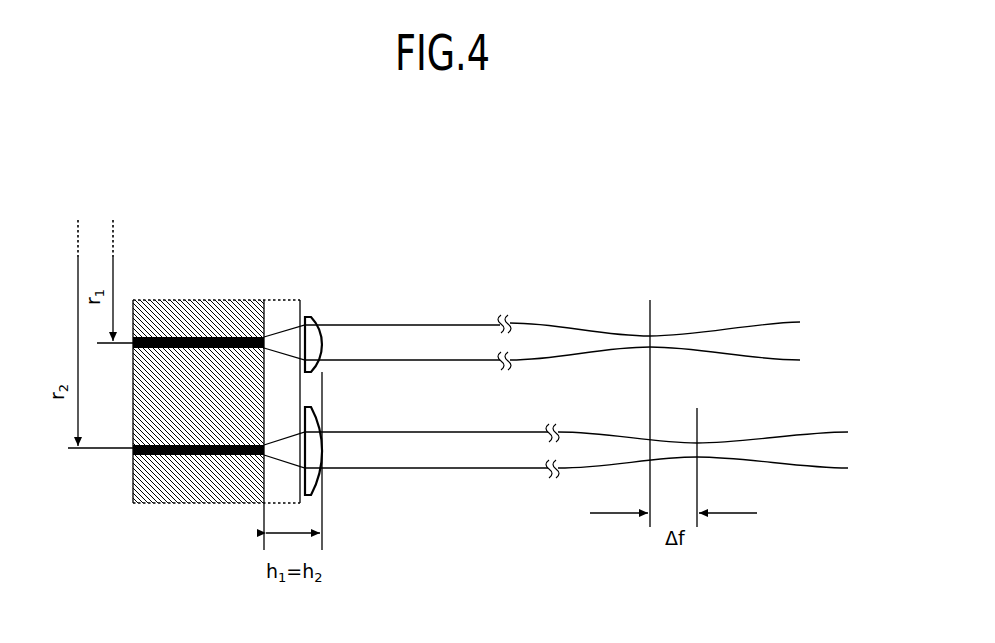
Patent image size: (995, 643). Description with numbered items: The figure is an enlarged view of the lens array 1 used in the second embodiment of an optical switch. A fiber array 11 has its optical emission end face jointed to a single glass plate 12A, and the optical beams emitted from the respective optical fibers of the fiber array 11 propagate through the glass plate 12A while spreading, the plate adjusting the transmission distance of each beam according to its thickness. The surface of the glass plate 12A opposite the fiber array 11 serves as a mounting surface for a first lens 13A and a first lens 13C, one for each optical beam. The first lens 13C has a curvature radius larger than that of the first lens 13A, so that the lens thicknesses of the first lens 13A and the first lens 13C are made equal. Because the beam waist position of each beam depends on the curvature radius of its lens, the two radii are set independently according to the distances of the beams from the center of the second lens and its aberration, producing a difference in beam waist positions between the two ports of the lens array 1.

The lens array 1 is at (177, 200).
The fiber array 11 is at (191, 300).
The glass plate 12A is at (277, 300).
The first lens 13A is at (306, 315).
The first lens 13C is at (323, 420).